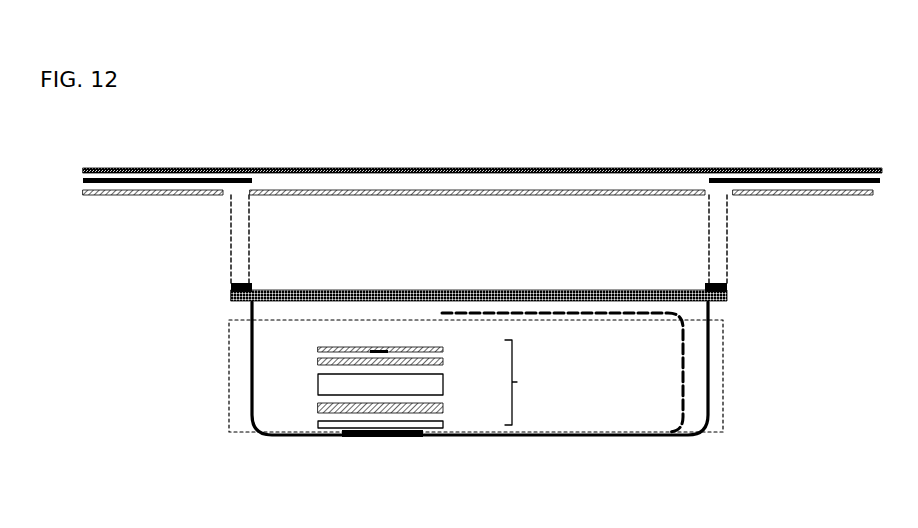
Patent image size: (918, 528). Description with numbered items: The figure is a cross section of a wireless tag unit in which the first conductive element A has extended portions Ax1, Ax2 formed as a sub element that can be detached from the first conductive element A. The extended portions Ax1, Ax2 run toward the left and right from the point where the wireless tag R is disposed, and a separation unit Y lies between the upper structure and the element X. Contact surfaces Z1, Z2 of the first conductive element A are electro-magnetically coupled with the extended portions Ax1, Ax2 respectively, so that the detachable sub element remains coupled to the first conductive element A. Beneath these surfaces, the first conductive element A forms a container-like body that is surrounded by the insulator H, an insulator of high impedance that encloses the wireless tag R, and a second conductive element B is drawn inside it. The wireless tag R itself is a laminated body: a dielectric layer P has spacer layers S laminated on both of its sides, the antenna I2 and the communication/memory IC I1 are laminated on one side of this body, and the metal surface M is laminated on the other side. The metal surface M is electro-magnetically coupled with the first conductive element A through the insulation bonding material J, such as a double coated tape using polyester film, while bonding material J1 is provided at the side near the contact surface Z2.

The extended portion of first conductive element Ax1 is at (167, 183).
The another extended portion of first conductive element Ax2 is at (782, 183).
The separation unit Y is at (400, 200).
The X member X is at (453, 278).
The bonding surface of first conductive element Z1 is at (225, 287).
The bonding surface of first conductive element Z2 is at (728, 287).
The first conductive element A is at (617, 435).
The second conductive element B is at (615, 315).
The insulator H is at (720, 358).
The bonding material 1 J1 is at (721, 302).
The bonding material J is at (345, 438).
The IC having communication/memory functions I1 is at (367, 351).
The antenna I2 is at (443, 350).
The spacer layer S is at (443, 361).
The dielectric layer P is at (437, 390).
The metal surface M is at (443, 426).
The wireless tag R is at (522, 382).